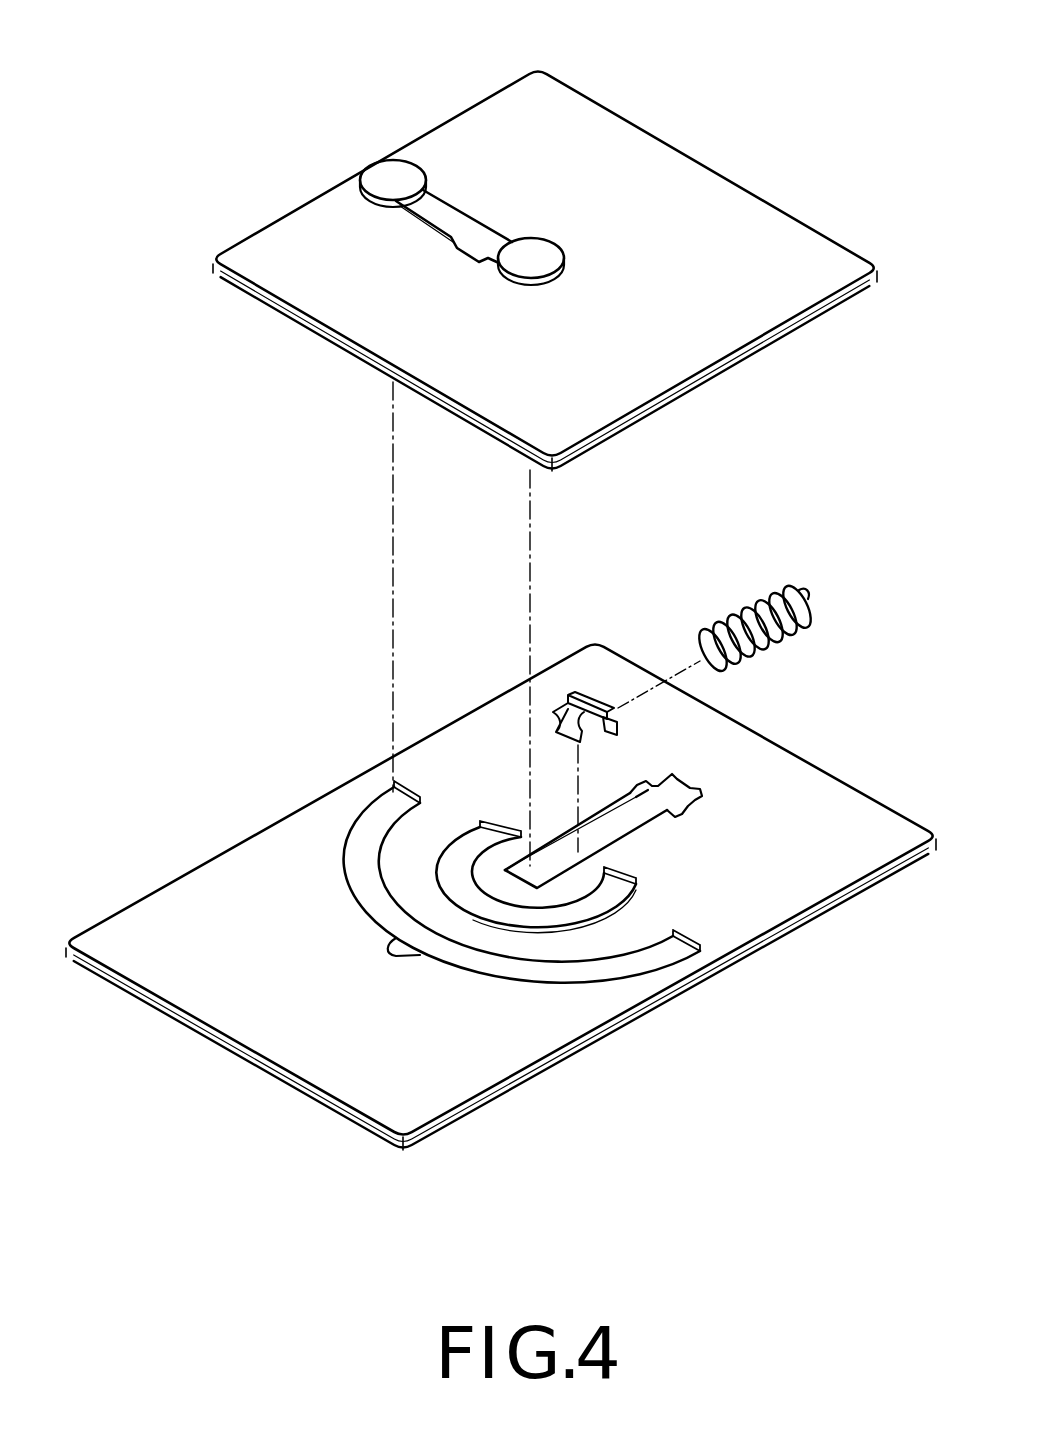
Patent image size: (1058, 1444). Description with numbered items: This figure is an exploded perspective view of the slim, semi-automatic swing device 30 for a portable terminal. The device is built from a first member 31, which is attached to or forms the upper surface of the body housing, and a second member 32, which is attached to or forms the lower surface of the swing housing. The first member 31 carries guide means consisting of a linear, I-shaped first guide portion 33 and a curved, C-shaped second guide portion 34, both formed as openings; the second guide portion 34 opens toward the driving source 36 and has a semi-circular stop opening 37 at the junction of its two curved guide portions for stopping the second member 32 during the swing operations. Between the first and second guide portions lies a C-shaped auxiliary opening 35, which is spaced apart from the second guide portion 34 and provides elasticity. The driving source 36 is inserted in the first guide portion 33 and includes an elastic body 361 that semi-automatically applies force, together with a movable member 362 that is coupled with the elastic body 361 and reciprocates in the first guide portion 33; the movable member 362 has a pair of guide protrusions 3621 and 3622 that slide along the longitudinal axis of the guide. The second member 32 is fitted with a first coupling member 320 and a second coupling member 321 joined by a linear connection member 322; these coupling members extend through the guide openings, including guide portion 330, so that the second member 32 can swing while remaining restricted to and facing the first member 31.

The swing device 30 is at (84, 259).
The first member 31 is at (160, 864).
The second member 32 is at (631, 101).
The first guide portion 33 is at (618, 828).
The second guide portion 34 is at (344, 848).
The auxiliary opening 35 is at (491, 832).
The driving source 36 is at (732, 604).
The stop opening 37 is at (393, 957).
The first coupling member 320 is at (543, 260).
The second coupling member 321 is at (385, 175).
The linear connection member 322 is at (453, 217).
The guide portion 330 is at (690, 807).
The elastic body 361 is at (810, 592).
The movable member 362 is at (753, 645).
The guide protrusion 3621 is at (618, 720).
The guide protrusion 3622 is at (618, 737).